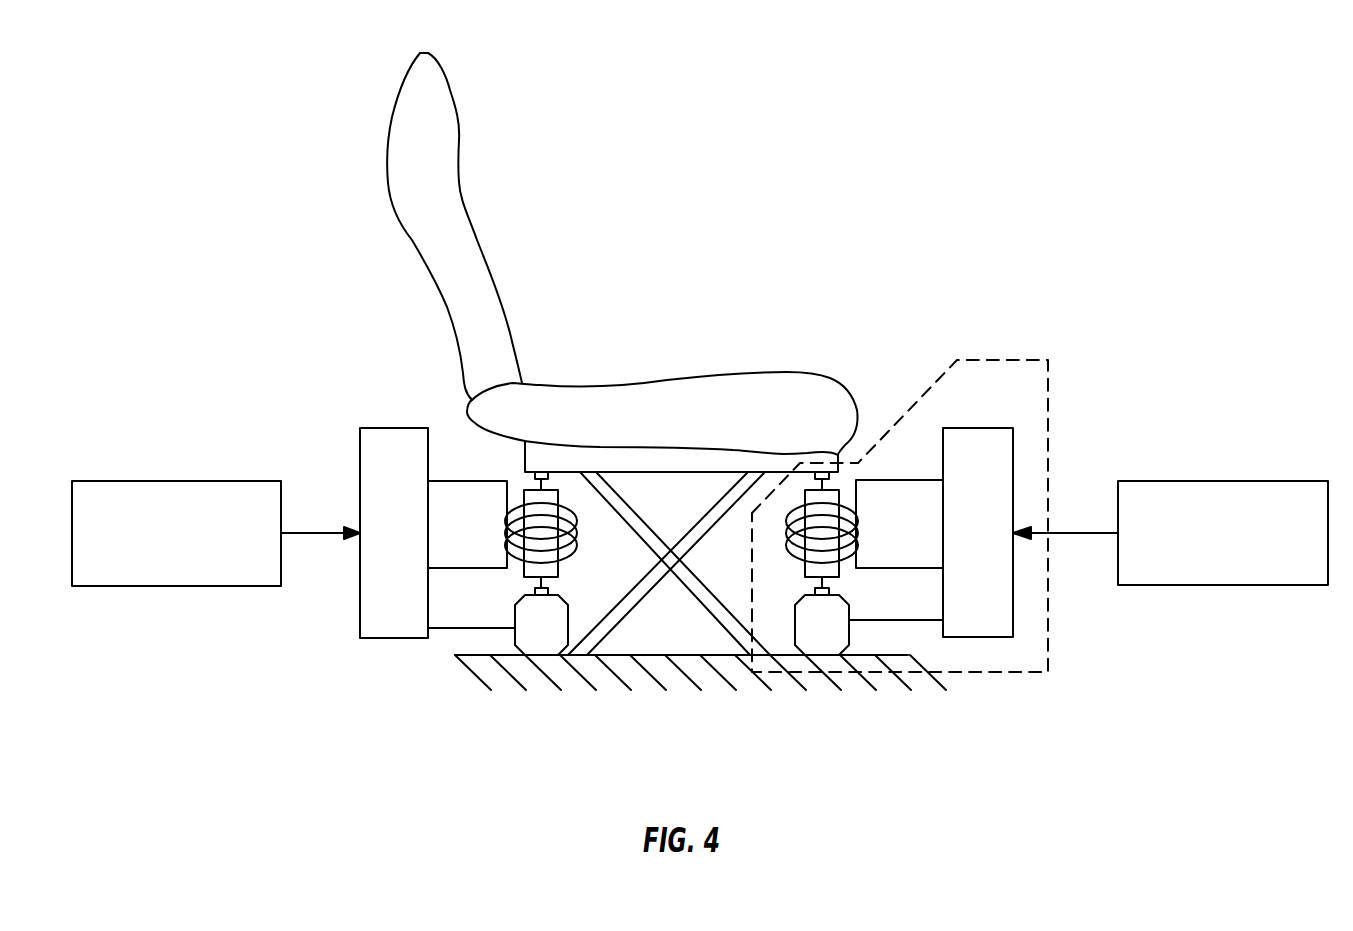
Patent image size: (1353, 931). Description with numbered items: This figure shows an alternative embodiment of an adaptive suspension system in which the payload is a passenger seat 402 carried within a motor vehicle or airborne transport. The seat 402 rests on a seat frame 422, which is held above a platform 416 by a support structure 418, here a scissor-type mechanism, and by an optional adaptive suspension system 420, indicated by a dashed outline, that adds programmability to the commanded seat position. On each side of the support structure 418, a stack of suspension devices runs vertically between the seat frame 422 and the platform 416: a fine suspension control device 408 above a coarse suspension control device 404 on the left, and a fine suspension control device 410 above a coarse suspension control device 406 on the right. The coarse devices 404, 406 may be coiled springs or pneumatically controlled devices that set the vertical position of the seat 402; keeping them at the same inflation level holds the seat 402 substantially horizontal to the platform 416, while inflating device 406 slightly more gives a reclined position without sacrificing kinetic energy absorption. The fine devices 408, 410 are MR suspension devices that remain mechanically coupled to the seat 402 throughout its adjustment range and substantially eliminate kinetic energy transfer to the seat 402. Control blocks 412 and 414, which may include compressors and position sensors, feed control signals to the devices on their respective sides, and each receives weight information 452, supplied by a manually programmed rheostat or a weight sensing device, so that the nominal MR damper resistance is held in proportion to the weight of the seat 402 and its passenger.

The passenger seat 402 is at (797, 393).
The coarse suspension control device 404 is at (518, 597).
The coarse suspension control device 406 is at (843, 602).
The fine suspension control device 408 is at (527, 488).
The fine suspension control device 410 is at (840, 487).
The control block 412 is at (393, 428).
The control block 414 is at (958, 428).
The platform 416 is at (862, 655).
The support structure 418 is at (638, 532).
The adaptive suspension system 420 is at (1003, 358).
The seat frame 422 is at (702, 465).
The weight information 452 is at (230, 481).